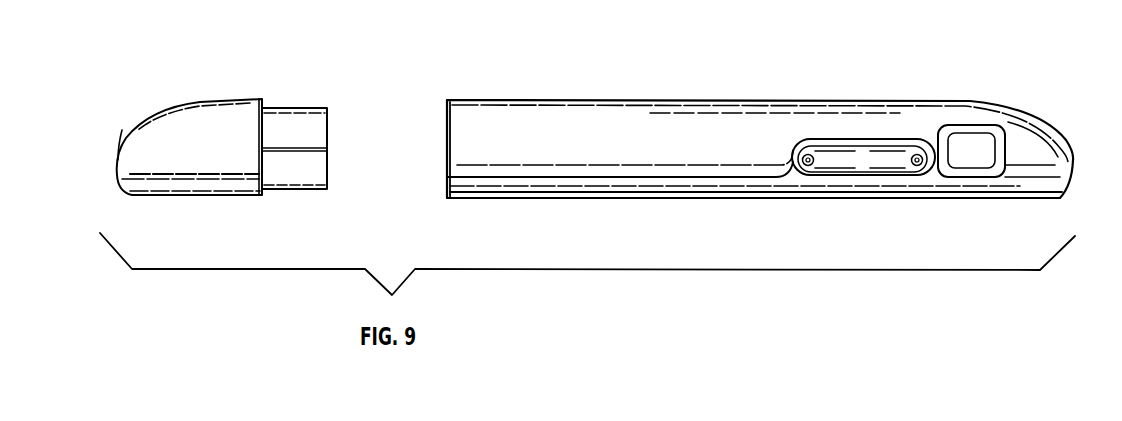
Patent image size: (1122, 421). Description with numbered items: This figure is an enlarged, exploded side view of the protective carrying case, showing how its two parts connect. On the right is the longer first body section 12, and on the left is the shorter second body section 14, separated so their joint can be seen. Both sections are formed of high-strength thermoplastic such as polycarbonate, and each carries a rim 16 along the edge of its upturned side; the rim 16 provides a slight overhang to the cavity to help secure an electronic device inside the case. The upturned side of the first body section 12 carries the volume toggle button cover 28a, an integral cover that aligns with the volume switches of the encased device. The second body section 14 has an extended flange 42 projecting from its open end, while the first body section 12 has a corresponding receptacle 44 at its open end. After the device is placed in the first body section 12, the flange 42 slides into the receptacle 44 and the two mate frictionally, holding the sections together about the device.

The first body section 12 is at (732, 102).
The second body section 14 is at (200, 102).
The rim 16 is at (210, 196).
The volume toggle button cover 28a is at (895, 157).
The extended flange 42 is at (303, 120).
The receptacle 44 is at (442, 157).